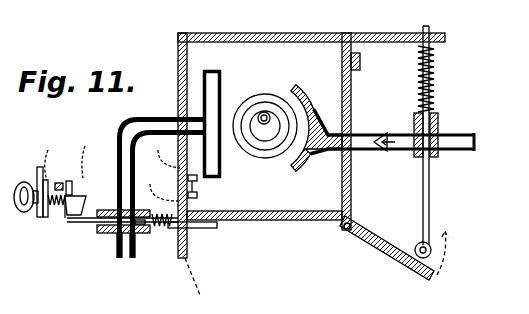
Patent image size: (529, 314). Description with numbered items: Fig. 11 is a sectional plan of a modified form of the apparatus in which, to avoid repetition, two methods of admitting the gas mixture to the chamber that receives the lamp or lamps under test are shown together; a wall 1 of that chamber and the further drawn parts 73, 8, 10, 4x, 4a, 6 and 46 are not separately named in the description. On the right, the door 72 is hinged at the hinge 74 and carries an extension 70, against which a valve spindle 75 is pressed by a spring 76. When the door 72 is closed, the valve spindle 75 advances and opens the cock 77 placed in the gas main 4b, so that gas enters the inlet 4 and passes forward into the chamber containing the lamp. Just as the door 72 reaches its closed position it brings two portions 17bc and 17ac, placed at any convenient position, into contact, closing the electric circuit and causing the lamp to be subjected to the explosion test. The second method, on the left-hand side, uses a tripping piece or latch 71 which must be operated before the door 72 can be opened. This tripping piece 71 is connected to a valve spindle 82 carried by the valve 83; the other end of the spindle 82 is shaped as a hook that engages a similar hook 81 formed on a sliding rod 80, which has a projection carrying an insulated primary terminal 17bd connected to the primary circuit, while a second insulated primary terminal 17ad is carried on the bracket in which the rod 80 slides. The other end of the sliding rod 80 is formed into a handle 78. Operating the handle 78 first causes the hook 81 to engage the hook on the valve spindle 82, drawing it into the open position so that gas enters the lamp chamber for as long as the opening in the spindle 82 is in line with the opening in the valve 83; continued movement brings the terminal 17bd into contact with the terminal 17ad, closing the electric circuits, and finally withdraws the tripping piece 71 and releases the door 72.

The housing 1 is at (399, 35).
The top wall 73 is at (270, 34).
The door 72 is at (266, 221).
The tripping piece 71 is at (203, 228).
The rotor drum 8 is at (266, 95).
The rotor hub 10 is at (262, 155).
The nozzle tube 4x is at (222, 78).
The supply pipe 4a is at (134, 119).
The contact portion 17bc is at (169, 196).
The contact portion 17ac is at (158, 186).
The primary terminal 17ad is at (34, 159).
The insulated terminal 17bd is at (86, 156).
The valve 83 is at (137, 236).
The gas main 4b is at (128, 264).
The valve spindle 82 is at (85, 226).
The hook 81 is at (84, 198).
The sliding rod 80 is at (56, 217).
The handle 78 is at (20, 208).
The inlet 4 is at (355, 151).
The valve 6 is at (381, 152).
The discharge pipe 46 is at (472, 151).
The cock 77 is at (438, 125).
The spring 76 is at (435, 88).
The valve spindle 75 is at (429, 197).
The extension 70 is at (392, 247).
The hinge 74 is at (346, 232).